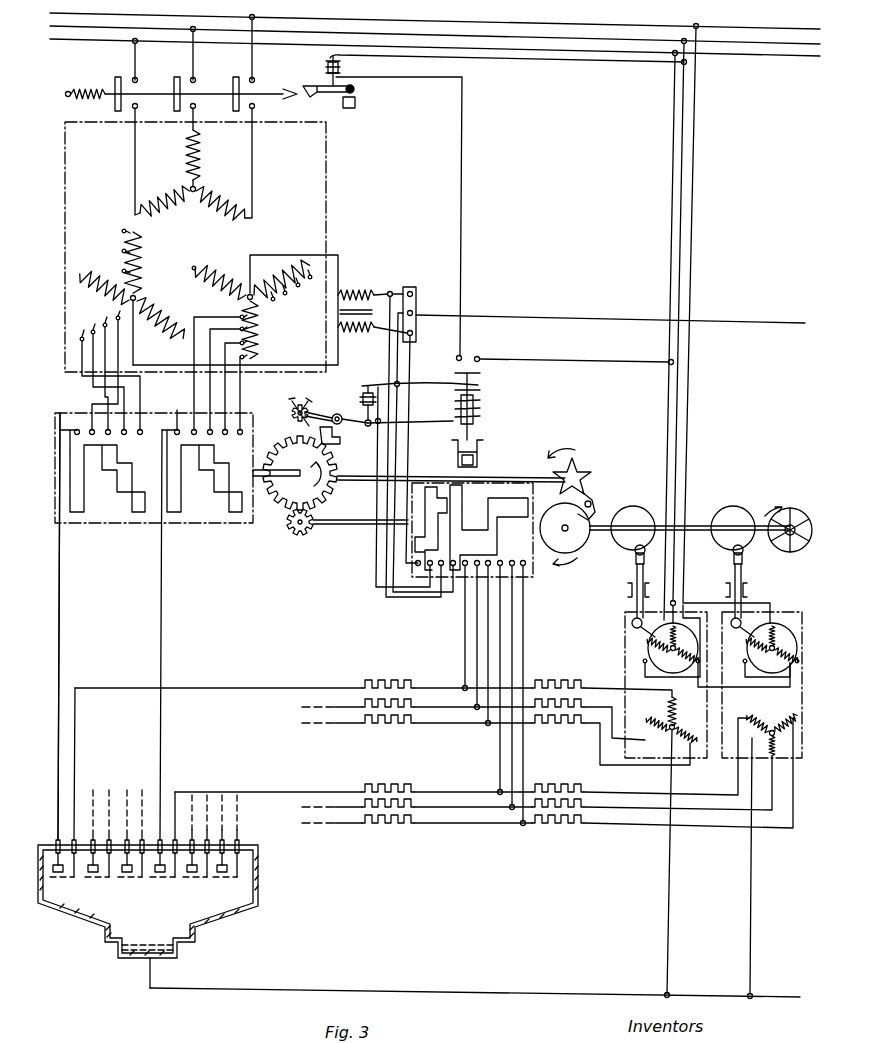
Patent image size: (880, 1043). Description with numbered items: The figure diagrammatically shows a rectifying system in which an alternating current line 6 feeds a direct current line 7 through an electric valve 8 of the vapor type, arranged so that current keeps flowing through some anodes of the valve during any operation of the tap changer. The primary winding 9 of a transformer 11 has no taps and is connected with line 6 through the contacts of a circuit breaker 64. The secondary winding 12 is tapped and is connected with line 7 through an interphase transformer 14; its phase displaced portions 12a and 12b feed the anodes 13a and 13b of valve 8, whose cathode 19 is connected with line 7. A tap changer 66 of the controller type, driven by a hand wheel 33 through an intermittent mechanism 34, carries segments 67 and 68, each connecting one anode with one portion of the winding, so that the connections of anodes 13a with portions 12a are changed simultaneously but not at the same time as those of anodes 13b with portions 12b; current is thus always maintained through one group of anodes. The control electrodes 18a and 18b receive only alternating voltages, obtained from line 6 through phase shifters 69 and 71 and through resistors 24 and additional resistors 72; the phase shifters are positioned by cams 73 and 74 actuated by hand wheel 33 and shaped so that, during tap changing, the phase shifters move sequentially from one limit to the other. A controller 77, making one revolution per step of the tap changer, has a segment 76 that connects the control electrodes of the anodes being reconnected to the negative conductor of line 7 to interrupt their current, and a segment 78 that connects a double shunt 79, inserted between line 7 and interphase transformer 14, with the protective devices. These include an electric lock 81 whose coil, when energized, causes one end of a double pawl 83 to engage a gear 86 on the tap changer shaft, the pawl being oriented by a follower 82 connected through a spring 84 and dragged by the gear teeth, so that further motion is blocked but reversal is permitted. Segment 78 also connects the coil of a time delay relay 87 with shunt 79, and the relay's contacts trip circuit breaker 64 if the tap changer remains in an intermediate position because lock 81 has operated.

The alternating current line 6 is at (748, 42).
The circuit breaker 64 is at (267, 97).
The transformer 11 is at (326, 158).
The primary winding 9 is at (200, 164).
The secondary winding 12 is at (140, 265).
The winding portions 12a is at (120, 293).
The winding portions 12b is at (258, 305).
The interphase transformer 14 is at (346, 296).
The double shunt 79 is at (418, 297).
The direct current line 7 is at (477, 647).
The time delay relay 87 is at (484, 404).
The double pawl 83 is at (300, 400).
The spring 84 is at (291, 410).
The electric lock 81 is at (335, 413).
The follower 82 is at (284, 433).
The gear 86 is at (326, 476).
The segment 67 is at (132, 516).
The segment 68 is at (170, 516).
The tap changer 66 is at (238, 524).
The controller 77 is at (536, 574).
The segment 78 is at (432, 487).
The segment 76 is at (518, 519).
The intermittent mechanism 34 is at (589, 478).
The cam 73 is at (635, 508).
The cam 74 is at (726, 510).
The hand wheel 33 is at (803, 512).
The phase shifter 69 is at (625, 652).
The phase shifter 71 is at (796, 613).
The current limiting resistors 24 is at (386, 689).
The additional resistors 72 is at (560, 689).
The electric valve 8 is at (74, 916).
The cathode 19 is at (140, 953).
The anodes 13a is at (118, 876).
The control electrodes 18a is at (128, 886).
The anodes 13b is at (205, 876).
The control electrodes 18b is at (214, 882).